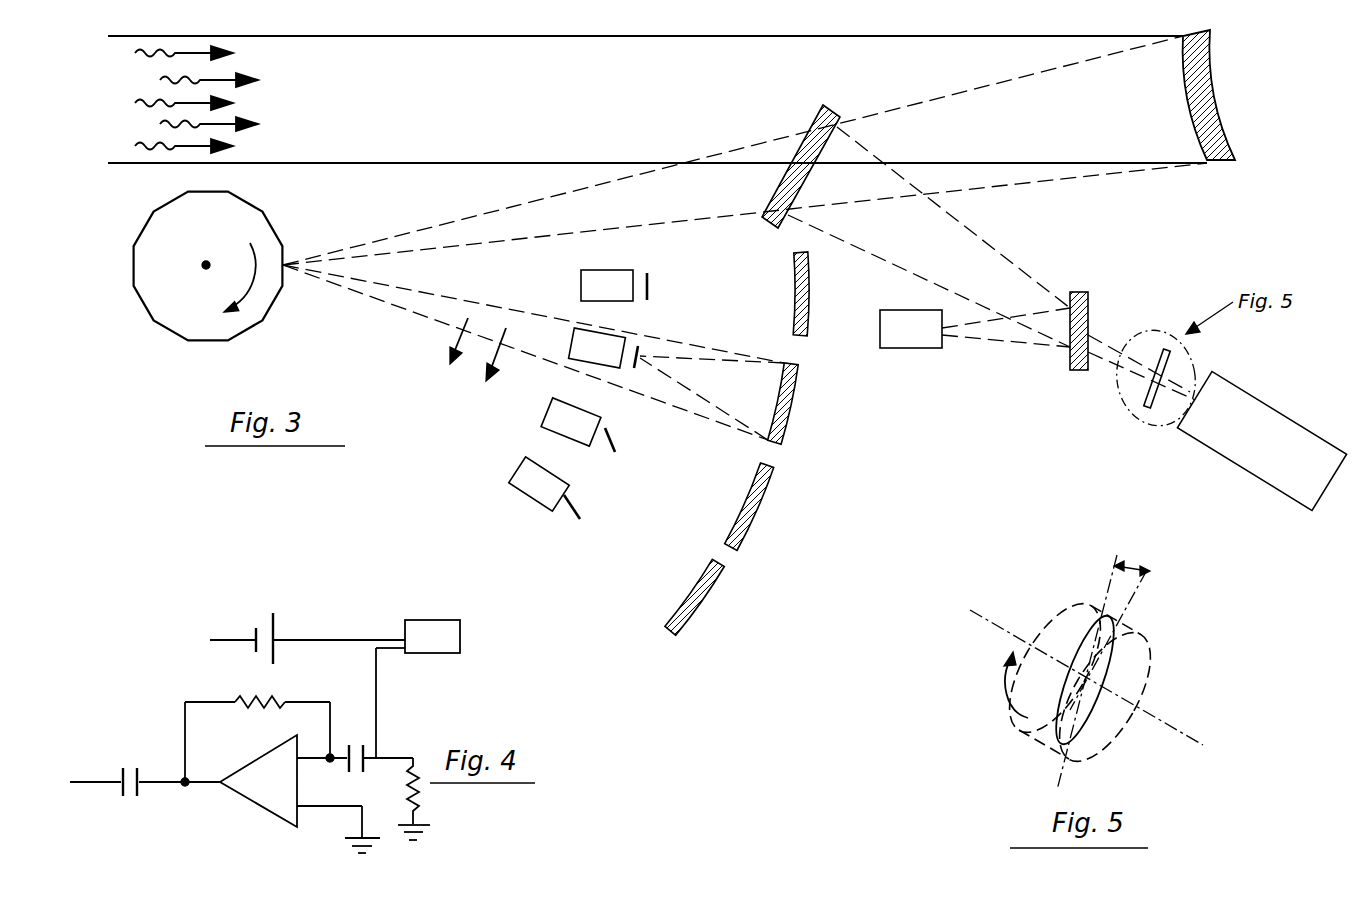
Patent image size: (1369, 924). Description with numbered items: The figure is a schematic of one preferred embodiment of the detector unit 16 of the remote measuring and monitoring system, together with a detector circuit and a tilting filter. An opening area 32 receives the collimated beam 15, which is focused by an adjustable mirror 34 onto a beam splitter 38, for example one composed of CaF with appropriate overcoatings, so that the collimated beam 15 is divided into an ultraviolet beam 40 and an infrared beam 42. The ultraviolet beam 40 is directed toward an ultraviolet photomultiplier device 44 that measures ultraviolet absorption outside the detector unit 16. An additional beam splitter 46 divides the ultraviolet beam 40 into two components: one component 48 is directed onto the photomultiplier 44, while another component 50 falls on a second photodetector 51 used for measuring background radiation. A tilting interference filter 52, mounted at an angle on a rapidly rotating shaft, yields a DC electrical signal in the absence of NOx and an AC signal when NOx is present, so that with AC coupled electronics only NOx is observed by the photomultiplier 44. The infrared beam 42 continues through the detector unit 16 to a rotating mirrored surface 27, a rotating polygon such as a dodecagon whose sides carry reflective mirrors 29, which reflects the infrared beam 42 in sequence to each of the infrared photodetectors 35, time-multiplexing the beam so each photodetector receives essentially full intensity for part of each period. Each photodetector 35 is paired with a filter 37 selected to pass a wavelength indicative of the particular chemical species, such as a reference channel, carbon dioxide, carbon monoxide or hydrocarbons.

In FIG. 3, the collimated beam 15 is at (247, 83).
In FIG. 3, the detector unit 16 is at (615, 20).
In FIG. 3, the rotating mirrored surface 27 is at (192, 241).
In FIG. 3, the reflective mirrors 29 is at (140, 297).
In FIG. 3, the opening area 32 is at (118, 121).
In FIG. 3, the adjustable mirror 34 is at (1222, 75).
In FIG. 3, the infrared photodetector 35 is at (581, 286).
In FIG. 4, the infrared photodetector 35 is at (428, 655).
In FIG. 3, the filter 37 is at (651, 289).
In FIG. 3, the beam splitter 38 is at (828, 106).
In FIG. 3, the ultraviolet beam 40 is at (1003, 254).
In FIG. 3, the infrared beam 42 is at (517, 205).
In FIG. 3, the ultraviolet photomultiplier device 44 is at (1236, 463).
In FIG. 3, the additional beam splitter 46 is at (1088, 296).
In FIG. 3, the component directed onto the photomultiplier 48 is at (1110, 345).
In FIG. 3, the component directed onto the second photodetector 50 is at (1022, 343).
In FIG. 3, the second photodetector 51 is at (899, 340).
In FIG. 3, the tilting interference filter 52 is at (1156, 412).
In FIG. 5, the tilting interference filter 52 is at (1150, 668).